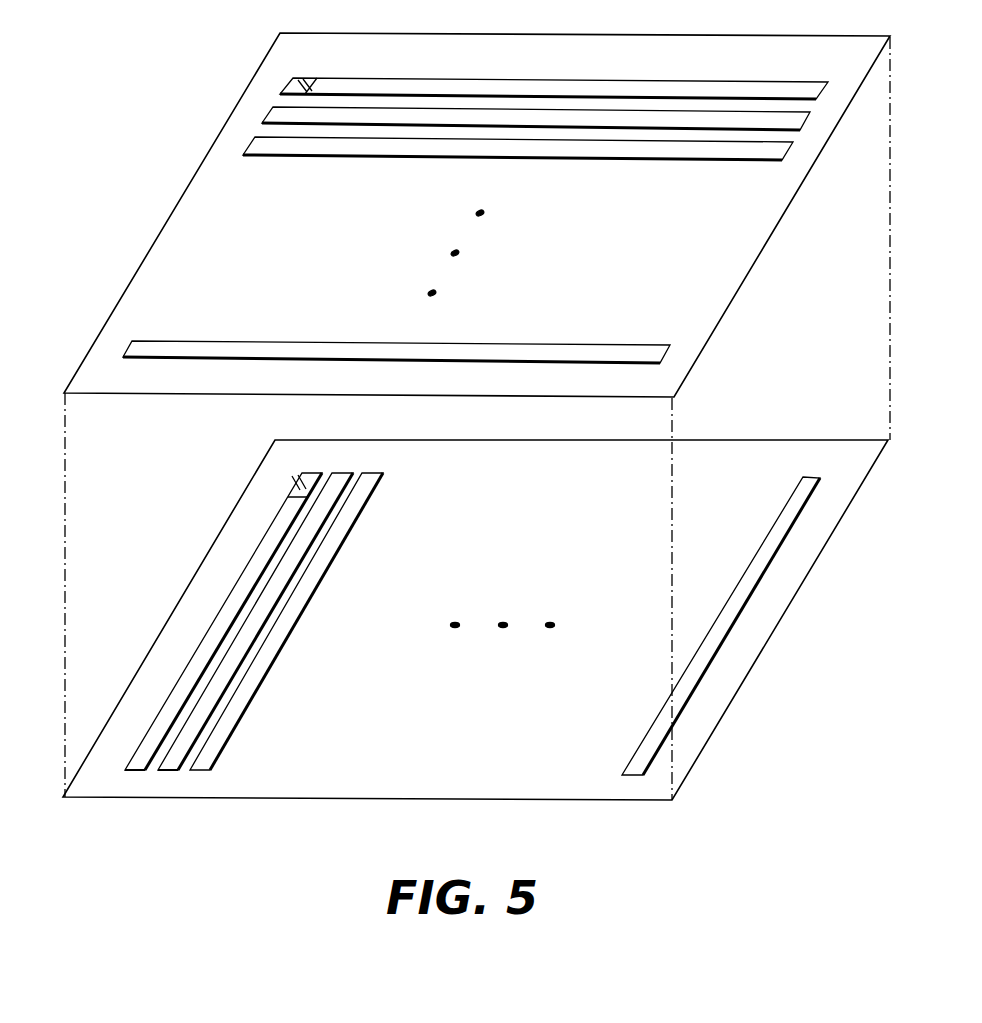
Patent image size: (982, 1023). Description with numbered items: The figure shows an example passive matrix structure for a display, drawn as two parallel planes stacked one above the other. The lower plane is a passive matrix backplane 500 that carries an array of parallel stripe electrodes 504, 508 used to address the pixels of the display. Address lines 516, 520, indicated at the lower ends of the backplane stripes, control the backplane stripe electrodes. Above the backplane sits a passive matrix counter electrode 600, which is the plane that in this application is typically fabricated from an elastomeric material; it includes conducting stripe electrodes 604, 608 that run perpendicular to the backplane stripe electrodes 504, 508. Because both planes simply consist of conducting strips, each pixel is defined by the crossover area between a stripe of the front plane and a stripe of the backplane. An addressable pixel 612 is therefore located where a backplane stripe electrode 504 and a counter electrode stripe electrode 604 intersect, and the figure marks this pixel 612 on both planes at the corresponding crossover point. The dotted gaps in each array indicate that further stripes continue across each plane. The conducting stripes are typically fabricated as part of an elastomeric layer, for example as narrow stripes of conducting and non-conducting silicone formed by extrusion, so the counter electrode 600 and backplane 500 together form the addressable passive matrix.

The passive matrix backplane 500 is at (212, 587).
The stripe electrode 504 is at (220, 622).
The stripe electrode 508 is at (230, 655).
The address line 516 is at (133, 773).
The address line 520 is at (160, 773).
The passive matrix counter electrode 600 is at (213, 203).
The conducting stripe electrode 604 is at (530, 88).
The conducting stripe electrode 608 is at (805, 122).
The pixel 612 is at (307, 84).